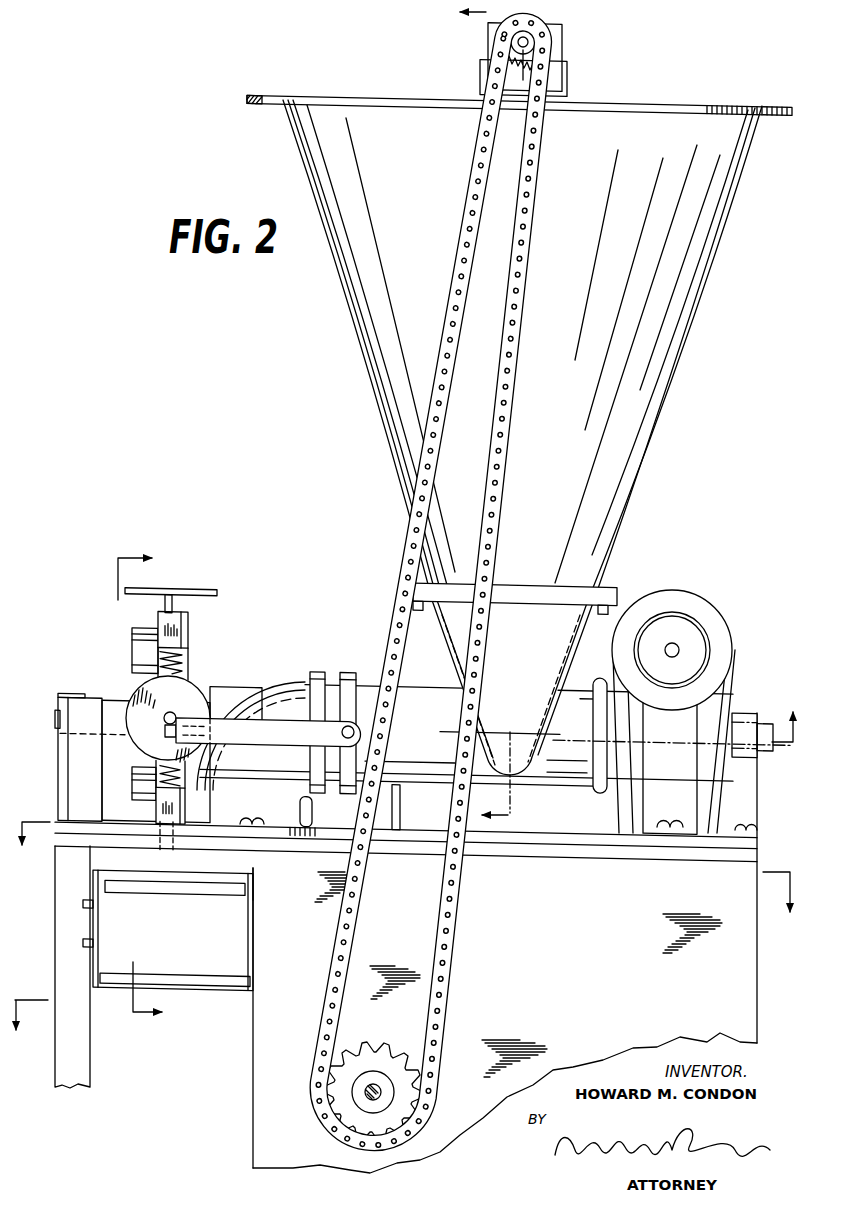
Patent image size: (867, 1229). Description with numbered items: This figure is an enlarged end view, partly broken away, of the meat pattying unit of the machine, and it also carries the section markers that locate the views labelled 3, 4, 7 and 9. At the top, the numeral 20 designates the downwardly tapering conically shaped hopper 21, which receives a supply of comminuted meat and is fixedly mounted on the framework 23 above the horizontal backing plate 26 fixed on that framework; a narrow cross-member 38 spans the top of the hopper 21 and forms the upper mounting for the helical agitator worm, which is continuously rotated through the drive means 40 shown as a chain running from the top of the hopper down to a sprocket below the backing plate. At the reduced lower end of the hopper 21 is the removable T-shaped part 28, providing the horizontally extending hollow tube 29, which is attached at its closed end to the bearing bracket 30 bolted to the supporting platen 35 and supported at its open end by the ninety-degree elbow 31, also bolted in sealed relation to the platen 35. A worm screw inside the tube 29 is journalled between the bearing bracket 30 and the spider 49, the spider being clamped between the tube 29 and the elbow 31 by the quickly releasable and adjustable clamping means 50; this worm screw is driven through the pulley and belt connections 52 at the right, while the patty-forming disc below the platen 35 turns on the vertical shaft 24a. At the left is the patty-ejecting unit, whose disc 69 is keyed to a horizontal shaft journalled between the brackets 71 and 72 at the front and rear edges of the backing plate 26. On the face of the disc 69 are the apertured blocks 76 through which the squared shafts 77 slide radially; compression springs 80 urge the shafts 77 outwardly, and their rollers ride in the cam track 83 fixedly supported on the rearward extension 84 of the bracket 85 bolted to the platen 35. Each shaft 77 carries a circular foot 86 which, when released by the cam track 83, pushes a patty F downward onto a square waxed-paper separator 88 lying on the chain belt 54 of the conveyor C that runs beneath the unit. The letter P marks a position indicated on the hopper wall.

The hopper 20 is at (663, 92).
The hopper 21 is at (358, 356).
The framework 23 is at (762, 847).
The vertical shaft 24a is at (420, 900).
The backing plate 26 is at (590, 860).
The T-shaped part 28 is at (447, 647).
The hollow tube 29 is at (583, 786).
The bearing bracket 30 is at (699, 708).
The elbow 31 is at (284, 680).
The supporting platen 35 is at (443, 828).
The cross-member 38 is at (569, 70).
The drive means 40 is at (553, 16).
The spider 49 is at (336, 672).
The clamping means 50 is at (224, 707).
The pulley and belt connections 52 is at (741, 660).
The chain belt 54 is at (180, 973).
The disc 69 is at (184, 672).
The bracket 71 is at (65, 697).
The bracket 72 is at (760, 712).
The apertured blocks 76 is at (160, 618).
The squared shafts 77 is at (181, 601).
The compression springs 80 is at (182, 658).
The cam track 83 is at (133, 657).
The rearward extension 84 is at (122, 706).
The bracket 85 is at (75, 758).
The foot 86 is at (210, 592).
The separator 88 is at (233, 883).
The section line 3- 3 is at (406, 793).
The section line 4- 4 is at (472, 413).
The section line 7- 7 is at (152, 788).
The section line 9- 9 is at (403, 967).
The plate P is at (643, 542).
The patty F is at (200, 884).
The conveyor C is at (192, 911).